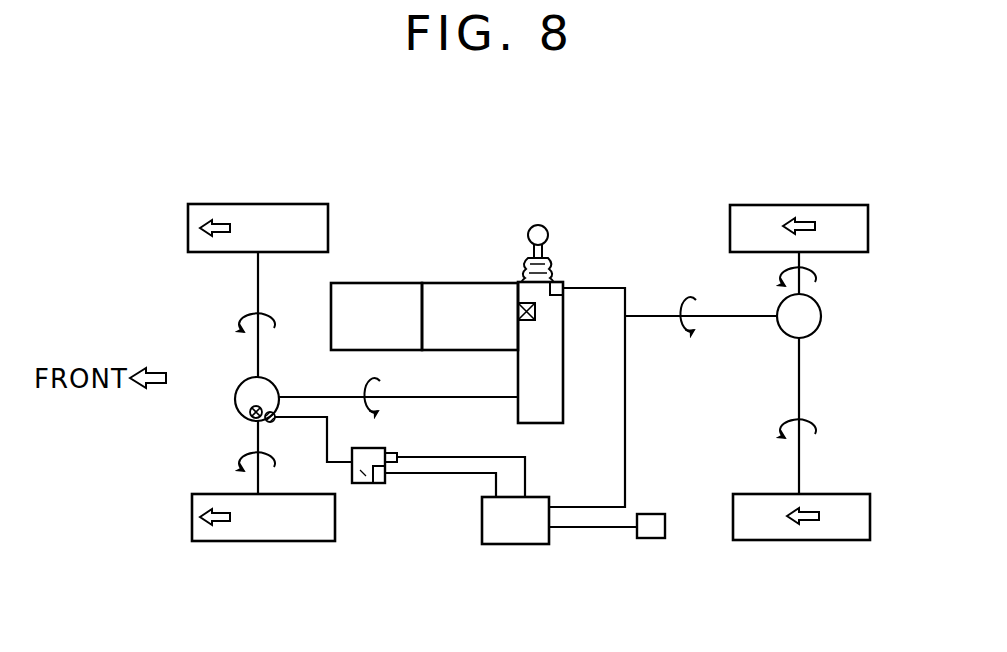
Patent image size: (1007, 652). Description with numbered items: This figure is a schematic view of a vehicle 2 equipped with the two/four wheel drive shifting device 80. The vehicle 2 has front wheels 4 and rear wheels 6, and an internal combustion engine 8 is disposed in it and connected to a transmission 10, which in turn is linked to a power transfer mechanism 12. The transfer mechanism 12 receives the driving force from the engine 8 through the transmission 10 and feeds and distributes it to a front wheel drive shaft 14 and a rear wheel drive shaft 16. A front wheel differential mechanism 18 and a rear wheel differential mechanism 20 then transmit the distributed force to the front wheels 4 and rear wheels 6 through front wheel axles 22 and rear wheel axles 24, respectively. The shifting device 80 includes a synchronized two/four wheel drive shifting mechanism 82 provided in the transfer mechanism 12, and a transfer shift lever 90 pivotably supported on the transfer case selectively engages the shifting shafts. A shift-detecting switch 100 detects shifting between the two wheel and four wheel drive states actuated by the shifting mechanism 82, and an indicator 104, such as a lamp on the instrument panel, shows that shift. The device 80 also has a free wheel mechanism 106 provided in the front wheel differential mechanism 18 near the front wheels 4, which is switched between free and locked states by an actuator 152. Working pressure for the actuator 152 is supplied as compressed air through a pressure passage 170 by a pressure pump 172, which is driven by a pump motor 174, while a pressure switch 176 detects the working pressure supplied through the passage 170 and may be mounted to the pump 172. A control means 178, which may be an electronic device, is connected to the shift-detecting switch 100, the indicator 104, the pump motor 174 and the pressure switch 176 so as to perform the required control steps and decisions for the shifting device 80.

The vehicle 2 is at (603, 176).
The front wheels 4 is at (282, 212).
The rear wheels 6 is at (832, 212).
The internal combustion engine 8 is at (373, 290).
The transmission 10 is at (430, 290).
The power transfer mechanism 12 is at (562, 400).
The front wheel drive shaft 14 is at (468, 401).
The rear wheel drive shaft 16 is at (732, 320).
The front wheel differential mechanism 18 is at (250, 392).
The rear wheel differential mechanism 20 is at (806, 326).
The front wheel axles 22 is at (258, 280).
The rear wheel axles 24 is at (806, 296).
The two/four wheel drive shifting device 80 is at (608, 243).
The two/four wheel drive shifting mechanism 82 is at (517, 302).
The transfer shift lever 90 is at (538, 228).
The shift-detecting switch 100 is at (564, 290).
The indicator 104 is at (652, 537).
The free wheel mechanism 106 is at (246, 408).
The actuator 152 is at (275, 425).
The pressure passage 170 is at (352, 466).
The pressure pump 172 is at (364, 476).
The pump motor 174 is at (380, 478).
The pressure switch 176 is at (395, 463).
The control means 178 is at (520, 532).